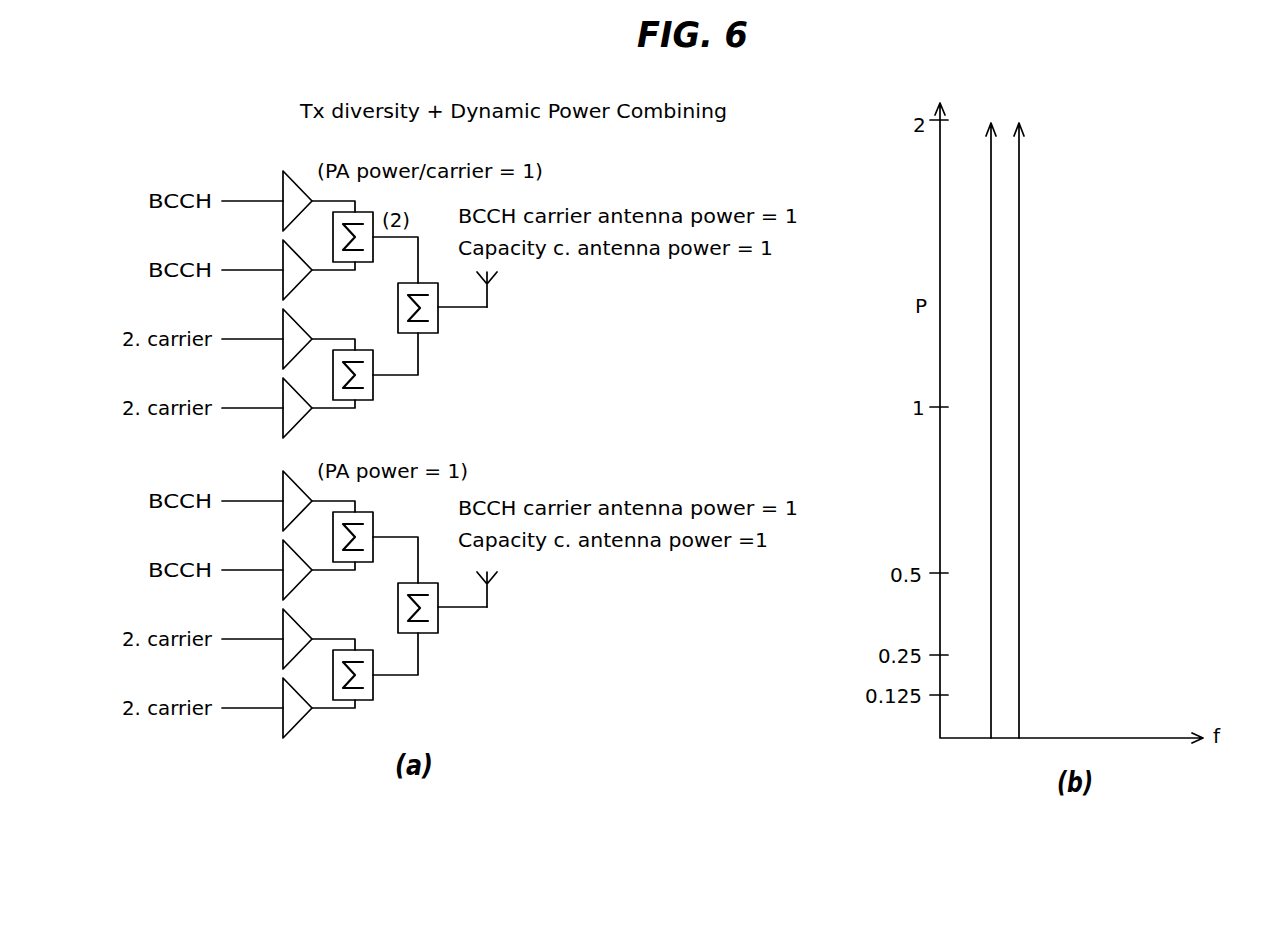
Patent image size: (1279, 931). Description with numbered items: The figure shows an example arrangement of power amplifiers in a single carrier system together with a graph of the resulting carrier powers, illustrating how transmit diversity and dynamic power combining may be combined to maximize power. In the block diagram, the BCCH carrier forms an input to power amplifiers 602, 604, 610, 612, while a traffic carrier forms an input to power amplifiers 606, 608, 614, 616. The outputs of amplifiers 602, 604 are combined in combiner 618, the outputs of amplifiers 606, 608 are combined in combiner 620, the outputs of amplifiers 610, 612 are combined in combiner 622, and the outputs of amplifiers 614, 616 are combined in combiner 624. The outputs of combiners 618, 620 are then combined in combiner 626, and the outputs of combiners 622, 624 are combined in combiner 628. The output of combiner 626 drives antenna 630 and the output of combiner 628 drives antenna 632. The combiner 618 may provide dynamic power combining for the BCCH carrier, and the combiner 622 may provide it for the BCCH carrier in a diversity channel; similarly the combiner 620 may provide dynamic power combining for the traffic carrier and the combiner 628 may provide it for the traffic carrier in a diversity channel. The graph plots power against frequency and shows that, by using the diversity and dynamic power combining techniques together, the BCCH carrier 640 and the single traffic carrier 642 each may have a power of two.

The power amplifier 602 is at (283, 180).
The power amplifier 604 is at (283, 250).
The power amplifier 606 is at (283, 318).
The power amplifier 608 is at (283, 388).
The power amplifier 610 is at (283, 480).
The power amplifier 612 is at (283, 550).
The power amplifier 614 is at (283, 618).
The power amplifier 616 is at (283, 688).
The combiner 618 is at (360, 262).
The combiner 620 is at (373, 384).
The combiner 622 is at (360, 562).
The combiner 624 is at (373, 684).
The combiner 626 is at (438, 316).
The combiner 628 is at (438, 616).
The antenna 630 is at (499, 278).
The antenna 632 is at (499, 578).
The BCCH carrier 640 is at (992, 130).
The single traffic carrier 642 is at (1027, 130).